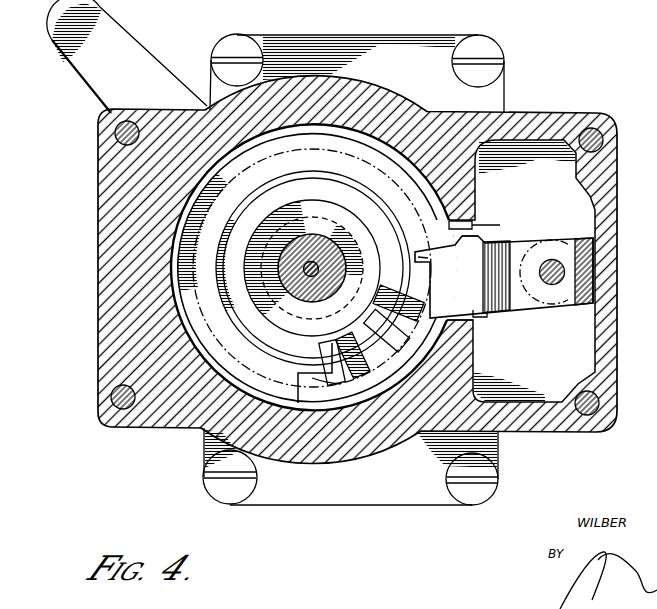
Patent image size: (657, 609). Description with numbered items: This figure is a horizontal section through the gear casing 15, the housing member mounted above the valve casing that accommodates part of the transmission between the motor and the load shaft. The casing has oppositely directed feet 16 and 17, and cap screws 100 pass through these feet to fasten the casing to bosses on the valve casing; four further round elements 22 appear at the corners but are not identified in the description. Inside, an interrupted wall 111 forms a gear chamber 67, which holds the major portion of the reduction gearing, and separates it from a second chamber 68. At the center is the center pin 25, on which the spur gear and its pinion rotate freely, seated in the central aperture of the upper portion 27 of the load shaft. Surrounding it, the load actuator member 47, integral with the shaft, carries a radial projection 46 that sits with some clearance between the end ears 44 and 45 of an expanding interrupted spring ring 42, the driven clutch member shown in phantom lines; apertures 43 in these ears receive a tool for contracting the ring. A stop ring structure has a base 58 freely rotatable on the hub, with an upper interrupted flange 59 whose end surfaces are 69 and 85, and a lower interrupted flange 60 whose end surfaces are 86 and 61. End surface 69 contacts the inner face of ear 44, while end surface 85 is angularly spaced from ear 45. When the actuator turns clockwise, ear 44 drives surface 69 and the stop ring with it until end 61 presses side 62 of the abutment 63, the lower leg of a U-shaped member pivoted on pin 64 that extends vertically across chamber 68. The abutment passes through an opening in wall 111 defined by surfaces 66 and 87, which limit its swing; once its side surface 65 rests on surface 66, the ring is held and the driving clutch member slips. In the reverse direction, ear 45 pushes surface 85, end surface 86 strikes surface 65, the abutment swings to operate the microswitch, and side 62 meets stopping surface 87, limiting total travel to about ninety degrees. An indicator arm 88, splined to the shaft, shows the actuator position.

The housing member or gear casing 15 is at (556, 111).
The foot 16 is at (486, 447).
The foot 17 is at (491, 97).
The bolt 22 is at (115, 133).
The center pin 25 is at (308, 253).
The upper portion of shaft 27 is at (312, 297).
The expanding interrupted spring ring 42 is at (210, 312).
The apertures 43 is at (390, 325).
The end ear 44 is at (357, 340).
The end ear 45 is at (380, 292).
The radial projection 46 is at (360, 352).
The load actuator member 47 is at (250, 288).
The base of stop ring structure 58 is at (168, 272).
The upper interrupted flange 59 is at (240, 320).
The lower interrupted flange 60 is at (247, 378).
The end surface of lower flange 61 is at (420, 257).
The side of abutment 62 is at (466, 236).
The abutment member 63 is at (488, 314).
The pin 64 is at (552, 262).
The side surface of abutment 65 is at (474, 326).
The limiting surface 66 is at (452, 320).
The chamber 67 is at (185, 203).
The chamber 68 is at (583, 345).
The end surface of upper flange 69 is at (314, 378).
The end surface of upper flange 85 is at (400, 293).
The end surface of lower flange 86 is at (300, 380).
The stopping surface 87 is at (476, 223).
The indicator arm 88 is at (125, 40).
The cap screws 100 is at (490, 50).
The interrupted wall 111 is at (458, 360).